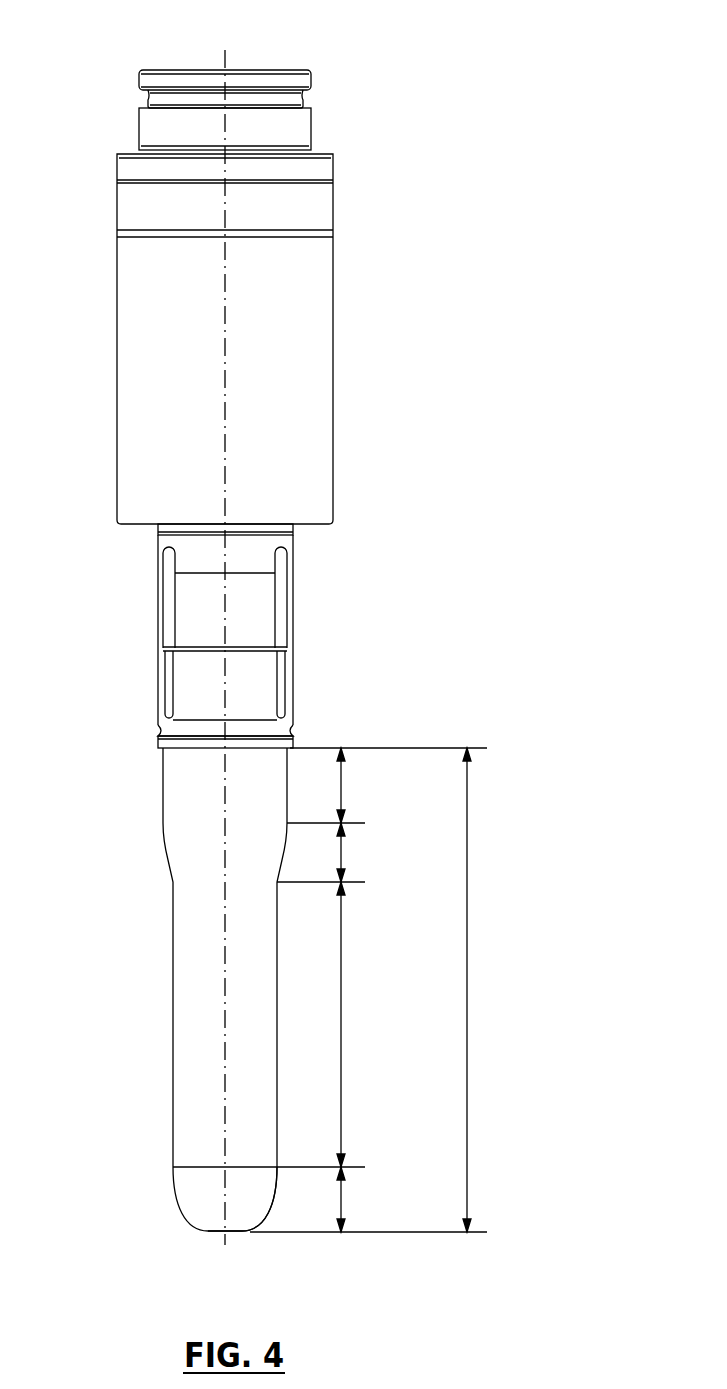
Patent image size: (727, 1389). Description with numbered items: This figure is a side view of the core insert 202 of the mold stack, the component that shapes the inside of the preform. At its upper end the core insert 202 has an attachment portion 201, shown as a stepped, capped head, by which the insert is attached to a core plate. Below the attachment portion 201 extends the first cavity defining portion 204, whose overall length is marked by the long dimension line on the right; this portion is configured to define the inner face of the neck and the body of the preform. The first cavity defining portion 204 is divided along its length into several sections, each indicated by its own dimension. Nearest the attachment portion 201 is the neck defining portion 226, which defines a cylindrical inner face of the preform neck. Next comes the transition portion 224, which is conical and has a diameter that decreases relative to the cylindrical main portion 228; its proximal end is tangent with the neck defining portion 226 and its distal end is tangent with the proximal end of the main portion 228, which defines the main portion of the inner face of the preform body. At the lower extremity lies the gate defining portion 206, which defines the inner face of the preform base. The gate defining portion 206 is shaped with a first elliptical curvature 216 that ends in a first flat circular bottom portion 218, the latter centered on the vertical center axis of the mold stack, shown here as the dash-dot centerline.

The attachment portion 201 is at (340, 122).
The core insert 202 is at (452, 702).
The first cavity defining portion 204 is at (467, 930).
The gate defining portion 206 is at (341, 1193).
The first elliptical curvature 216 is at (273, 1195).
The first flat circular bottom portion 218 is at (212, 1232).
The transition portion 224 is at (341, 852).
The neck defining portion 226 is at (341, 780).
The main portion 228 is at (341, 1007).